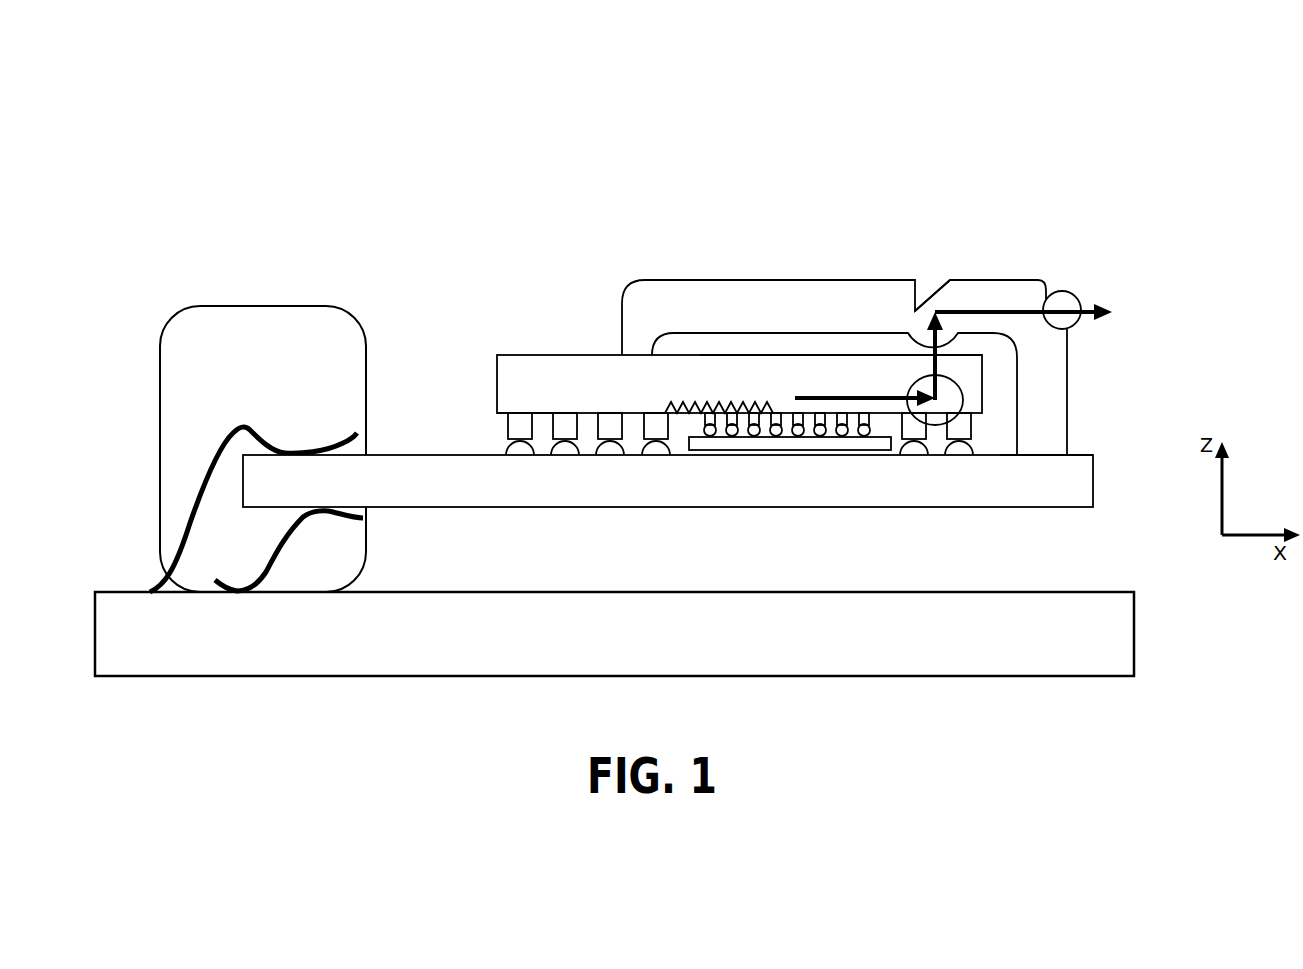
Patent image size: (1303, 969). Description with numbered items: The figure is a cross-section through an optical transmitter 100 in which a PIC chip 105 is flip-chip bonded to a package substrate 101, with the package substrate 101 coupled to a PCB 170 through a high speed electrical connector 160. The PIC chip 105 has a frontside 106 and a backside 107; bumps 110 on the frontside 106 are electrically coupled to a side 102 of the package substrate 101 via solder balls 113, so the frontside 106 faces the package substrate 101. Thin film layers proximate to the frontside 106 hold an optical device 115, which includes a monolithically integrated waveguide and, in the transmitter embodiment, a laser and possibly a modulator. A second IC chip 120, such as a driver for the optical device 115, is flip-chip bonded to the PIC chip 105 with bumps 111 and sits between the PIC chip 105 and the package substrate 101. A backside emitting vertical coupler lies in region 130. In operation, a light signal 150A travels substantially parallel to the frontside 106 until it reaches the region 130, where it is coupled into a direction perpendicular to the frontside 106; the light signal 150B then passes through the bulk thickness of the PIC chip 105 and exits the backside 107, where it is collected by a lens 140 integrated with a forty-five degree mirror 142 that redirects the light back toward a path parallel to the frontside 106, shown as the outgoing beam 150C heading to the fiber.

The optical transmitter 100 is at (132, 176).
The package substrate 101 is at (1060, 495).
The side of the package substrate 102 is at (1085, 453).
The PIC chip 105 is at (579, 393).
The frontside 106 is at (497, 413).
The backside 107 is at (852, 355).
The bumps 110 is at (507, 431).
The bumps 111 is at (703, 424).
The solder balls 113 is at (962, 448).
The optical device 115 is at (665, 408).
The second IC chip 120 is at (877, 442).
The region of backside emitting vertical coupler 130 is at (937, 428).
The lens 140 is at (955, 295).
The 45° mirror 142 is at (930, 305).
The light signal 150A is at (833, 393).
The light signal 150B is at (923, 357).
The optical beam to fiber 150C is at (1058, 285).
The high speed electrical connector 160 is at (287, 384).
The PCB 170 is at (495, 640).